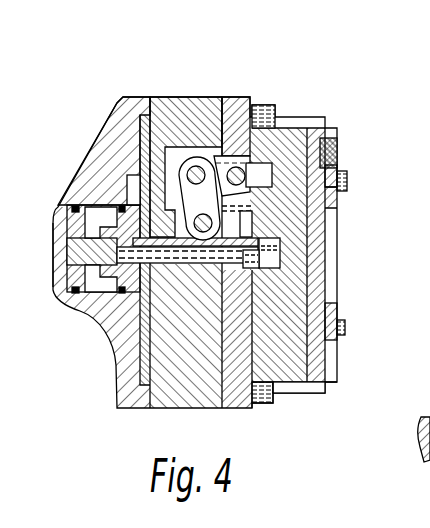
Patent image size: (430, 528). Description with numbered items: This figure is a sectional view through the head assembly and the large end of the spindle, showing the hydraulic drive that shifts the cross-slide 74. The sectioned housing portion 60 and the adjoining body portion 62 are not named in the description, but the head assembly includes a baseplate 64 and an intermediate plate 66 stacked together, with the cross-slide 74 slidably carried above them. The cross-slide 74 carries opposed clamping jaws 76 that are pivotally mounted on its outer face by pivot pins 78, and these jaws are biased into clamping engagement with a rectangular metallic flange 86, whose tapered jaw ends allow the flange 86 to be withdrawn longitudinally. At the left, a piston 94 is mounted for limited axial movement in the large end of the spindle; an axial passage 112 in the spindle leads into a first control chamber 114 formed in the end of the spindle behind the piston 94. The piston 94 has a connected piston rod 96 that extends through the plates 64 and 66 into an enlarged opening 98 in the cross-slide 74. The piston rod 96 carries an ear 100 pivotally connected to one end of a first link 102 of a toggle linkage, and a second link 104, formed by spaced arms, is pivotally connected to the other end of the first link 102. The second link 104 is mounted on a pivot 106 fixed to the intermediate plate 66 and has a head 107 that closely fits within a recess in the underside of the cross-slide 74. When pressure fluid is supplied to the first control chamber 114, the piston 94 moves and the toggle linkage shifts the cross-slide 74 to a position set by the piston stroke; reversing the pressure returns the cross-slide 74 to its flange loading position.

The housing flange portion 60 is at (130, 98).
The housing body 62 is at (147, 413).
The baseplate 64 is at (176, 106).
The intermediate plate 66 is at (236, 105).
The cross-slide 74 is at (293, 379).
The clamping jaws 76 is at (337, 168).
The pivot pins 78 is at (347, 180).
The flange 86 is at (332, 285).
The piston 94 is at (73, 275).
The piston rod 96 is at (182, 266).
The enlarged opening 98 is at (273, 256).
The ear 100 is at (244, 213).
The first link 102 is at (184, 158).
The second link 104 is at (267, 164).
The pivot 106 is at (262, 182).
The head 107 is at (268, 160).
The axial passage 112 is at (51, 230).
The first control chamber 114 is at (98, 206).